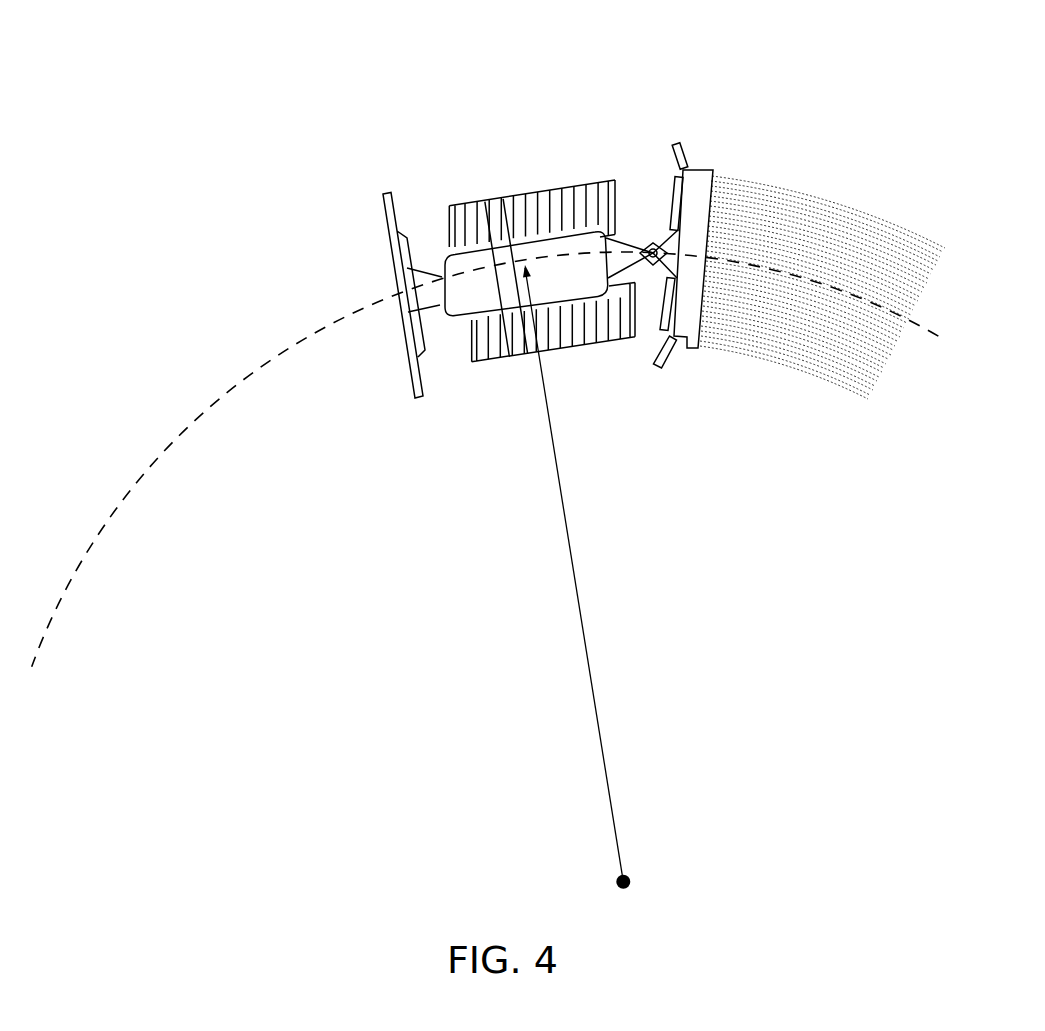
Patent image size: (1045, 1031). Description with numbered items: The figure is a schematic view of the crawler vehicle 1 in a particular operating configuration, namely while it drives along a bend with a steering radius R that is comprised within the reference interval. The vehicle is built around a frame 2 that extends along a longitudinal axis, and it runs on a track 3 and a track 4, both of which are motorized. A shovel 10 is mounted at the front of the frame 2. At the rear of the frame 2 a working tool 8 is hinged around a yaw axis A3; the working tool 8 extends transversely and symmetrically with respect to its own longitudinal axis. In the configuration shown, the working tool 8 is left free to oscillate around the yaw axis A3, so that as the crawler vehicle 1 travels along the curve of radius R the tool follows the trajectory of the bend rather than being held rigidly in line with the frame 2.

The crawler vehicle 1 is at (446, 128).
The frame 2 is at (526, 278).
The track 3 is at (532, 213).
The track 4 is at (553, 322).
The working tool 8 is at (697, 368).
The shovel 10 is at (412, 296).
The yaw axis A3 is at (652, 247).
The steering radius R is at (595, 703).